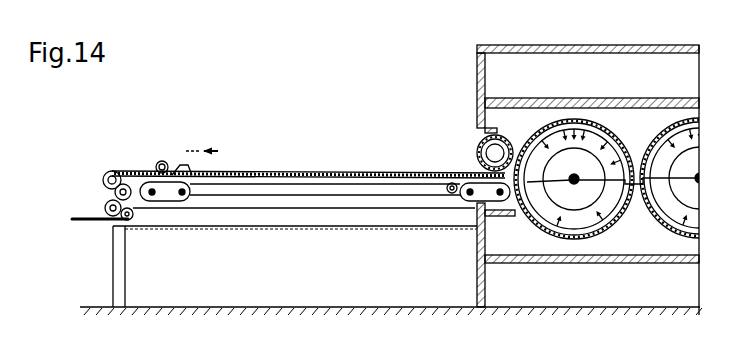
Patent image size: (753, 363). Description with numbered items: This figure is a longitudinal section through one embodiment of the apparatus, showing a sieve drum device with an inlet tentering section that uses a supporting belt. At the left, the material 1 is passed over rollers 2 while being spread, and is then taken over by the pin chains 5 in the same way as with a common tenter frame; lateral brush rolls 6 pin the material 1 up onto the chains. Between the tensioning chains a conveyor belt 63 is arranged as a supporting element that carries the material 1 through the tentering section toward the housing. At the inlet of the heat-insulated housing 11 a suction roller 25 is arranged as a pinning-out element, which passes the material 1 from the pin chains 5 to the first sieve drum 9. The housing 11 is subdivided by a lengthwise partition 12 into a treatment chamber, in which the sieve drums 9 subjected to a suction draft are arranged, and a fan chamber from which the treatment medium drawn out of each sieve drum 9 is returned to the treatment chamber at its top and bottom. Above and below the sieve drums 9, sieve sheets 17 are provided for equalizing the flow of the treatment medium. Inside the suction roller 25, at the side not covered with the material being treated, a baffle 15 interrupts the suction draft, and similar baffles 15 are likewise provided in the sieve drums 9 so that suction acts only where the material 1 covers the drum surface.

The material lengths 1 is at (95, 222).
The rollers 2 is at (105, 205).
The pin chains 5 is at (212, 202).
The brush rolls 6 is at (162, 160).
The sieve drums 9 is at (665, 226).
The housing 11 is at (513, 50).
The lengthwise partition 12 is at (495, 118).
The baffle 15 is at (476, 156).
The sieve sheets 17 is at (560, 100).
The suction roller 25 is at (478, 142).
The conveyor belt 63 is at (270, 196).